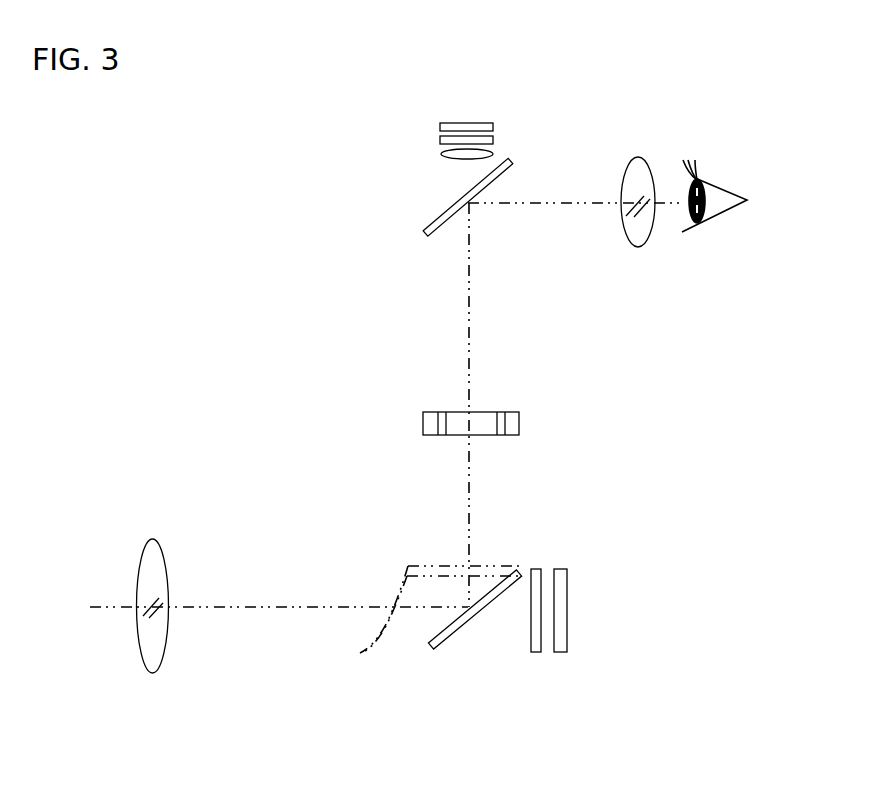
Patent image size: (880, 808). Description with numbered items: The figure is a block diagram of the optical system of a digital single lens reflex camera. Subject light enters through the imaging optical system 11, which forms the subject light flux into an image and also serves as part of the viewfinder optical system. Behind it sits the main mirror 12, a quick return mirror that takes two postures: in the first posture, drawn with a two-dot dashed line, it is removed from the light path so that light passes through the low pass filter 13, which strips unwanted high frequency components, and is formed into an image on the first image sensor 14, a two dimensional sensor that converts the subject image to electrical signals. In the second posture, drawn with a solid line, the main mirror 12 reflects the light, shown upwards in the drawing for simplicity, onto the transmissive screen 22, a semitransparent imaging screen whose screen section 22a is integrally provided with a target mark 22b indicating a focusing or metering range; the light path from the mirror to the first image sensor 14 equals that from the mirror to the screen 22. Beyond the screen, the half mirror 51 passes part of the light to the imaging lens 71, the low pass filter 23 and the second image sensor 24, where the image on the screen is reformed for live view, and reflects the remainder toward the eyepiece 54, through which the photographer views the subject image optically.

The imaging optical system 11 is at (150, 538).
The main mirror 12 is at (457, 613).
The low pass filter 13 is at (535, 652).
The first image sensor 14 is at (560, 652).
The transmissive screen 22 is at (520, 418).
The screen section 22a is at (458, 425).
The target mark 22b is at (440, 417).
The low pass filter 23 is at (439, 142).
The second image sensor 24 is at (439, 127).
The half mirror 51 is at (430, 214).
The eyepiece 54 is at (643, 158).
The imaging lens 71 is at (441, 156).